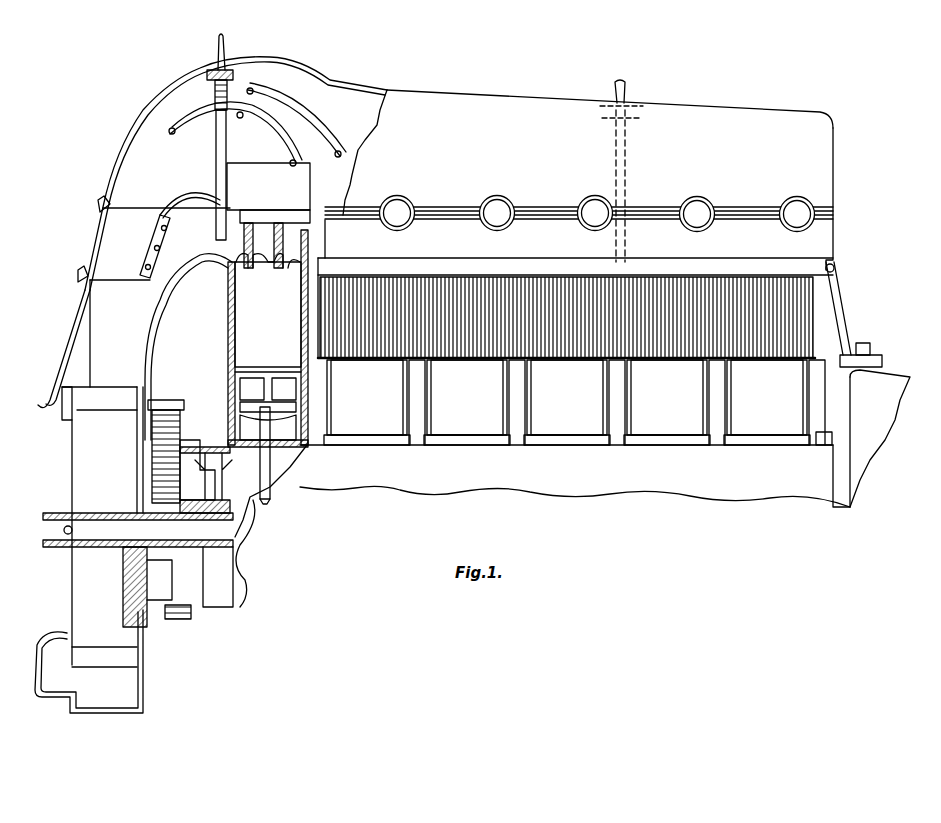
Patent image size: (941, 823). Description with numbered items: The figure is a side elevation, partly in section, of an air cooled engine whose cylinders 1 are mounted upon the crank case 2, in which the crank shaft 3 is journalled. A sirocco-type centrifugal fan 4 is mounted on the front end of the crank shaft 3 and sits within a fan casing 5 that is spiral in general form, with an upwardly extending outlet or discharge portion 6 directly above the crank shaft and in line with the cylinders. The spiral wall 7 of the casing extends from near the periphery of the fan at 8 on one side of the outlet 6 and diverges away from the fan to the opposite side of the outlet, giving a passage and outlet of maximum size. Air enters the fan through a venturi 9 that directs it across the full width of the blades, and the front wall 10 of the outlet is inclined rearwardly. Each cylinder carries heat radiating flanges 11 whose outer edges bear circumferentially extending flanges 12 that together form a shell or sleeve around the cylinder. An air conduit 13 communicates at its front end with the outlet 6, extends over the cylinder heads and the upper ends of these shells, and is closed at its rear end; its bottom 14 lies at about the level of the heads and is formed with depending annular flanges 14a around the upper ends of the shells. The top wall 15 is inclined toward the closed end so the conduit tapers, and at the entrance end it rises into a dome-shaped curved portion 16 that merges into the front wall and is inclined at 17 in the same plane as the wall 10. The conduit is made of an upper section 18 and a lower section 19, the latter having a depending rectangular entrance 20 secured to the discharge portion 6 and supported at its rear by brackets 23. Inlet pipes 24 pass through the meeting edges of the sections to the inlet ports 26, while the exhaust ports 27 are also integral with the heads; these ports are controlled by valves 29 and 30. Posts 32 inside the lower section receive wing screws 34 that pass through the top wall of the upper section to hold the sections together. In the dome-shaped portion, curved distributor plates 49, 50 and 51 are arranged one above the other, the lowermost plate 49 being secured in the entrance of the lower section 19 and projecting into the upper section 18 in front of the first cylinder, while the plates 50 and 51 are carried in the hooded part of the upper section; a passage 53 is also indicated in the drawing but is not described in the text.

The cylinders 1 is at (574, 402).
The crank case 2 is at (914, 393).
The crank shaft 3 is at (205, 528).
The centrifugal fan 4 is at (128, 437).
The fan casing 5 is at (148, 676).
The outlet or discharge portion 6 is at (82, 298).
The spiral wall 7 is at (123, 277).
The periphery of the fan 8 is at (68, 375).
The venturi 9 is at (50, 633).
The front wall of the outlet 10 is at (68, 327).
The heat radiating flanges 11 is at (222, 321).
The circumferentially extending flanges 12 is at (370, 298).
The air conduit 13 is at (120, 150).
The bottom of the air conduit 14 is at (232, 268).
The depending annular flanges 14a is at (487, 285).
The top wall 15 is at (444, 92).
The curved portion 16 is at (150, 103).
The inclined portion 17 is at (98, 210).
The upper section 18 is at (845, 184).
The lower section 19 is at (850, 243).
The depending rectangular entrance 20 is at (166, 243).
The brackets 23 is at (843, 311).
The inlet pipes 24 is at (410, 204).
The inlet ports 26 is at (312, 243).
The exhaust ports 27 is at (205, 270).
The valves 29 is at (250, 272).
The valves 30 is at (278, 272).
The posts 32 is at (215, 157).
The wing screws 34 is at (215, 42).
The lowermost plate or distributor 49 is at (170, 197).
The plate or distributor 50 is at (268, 140).
The plate or distributor 51 is at (288, 100).
The spark plug passage 53 is at (628, 158).